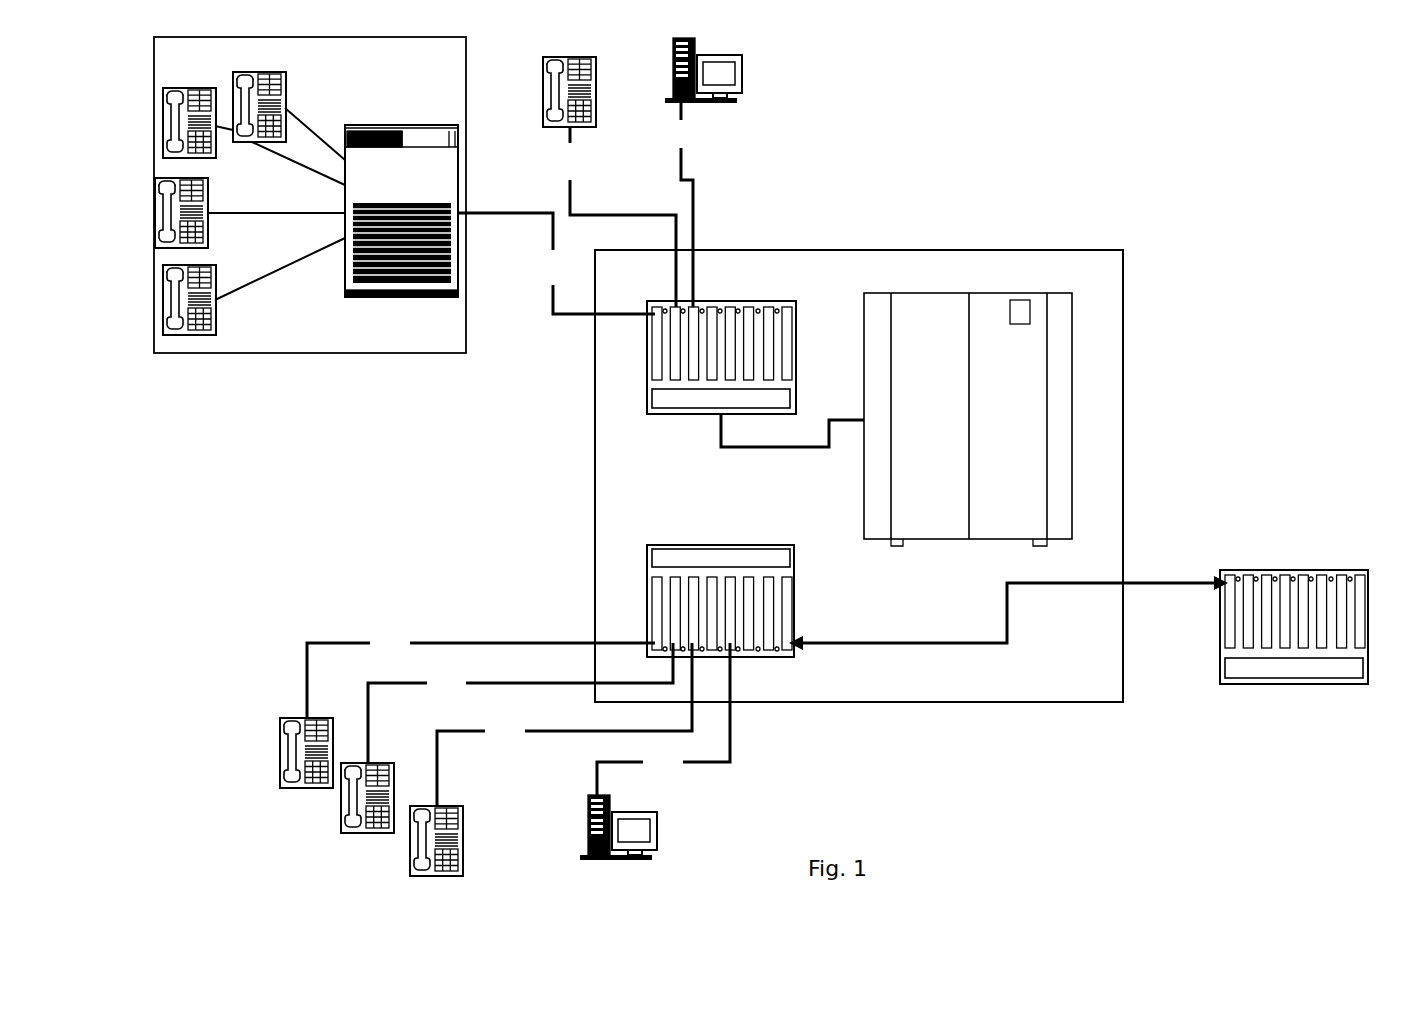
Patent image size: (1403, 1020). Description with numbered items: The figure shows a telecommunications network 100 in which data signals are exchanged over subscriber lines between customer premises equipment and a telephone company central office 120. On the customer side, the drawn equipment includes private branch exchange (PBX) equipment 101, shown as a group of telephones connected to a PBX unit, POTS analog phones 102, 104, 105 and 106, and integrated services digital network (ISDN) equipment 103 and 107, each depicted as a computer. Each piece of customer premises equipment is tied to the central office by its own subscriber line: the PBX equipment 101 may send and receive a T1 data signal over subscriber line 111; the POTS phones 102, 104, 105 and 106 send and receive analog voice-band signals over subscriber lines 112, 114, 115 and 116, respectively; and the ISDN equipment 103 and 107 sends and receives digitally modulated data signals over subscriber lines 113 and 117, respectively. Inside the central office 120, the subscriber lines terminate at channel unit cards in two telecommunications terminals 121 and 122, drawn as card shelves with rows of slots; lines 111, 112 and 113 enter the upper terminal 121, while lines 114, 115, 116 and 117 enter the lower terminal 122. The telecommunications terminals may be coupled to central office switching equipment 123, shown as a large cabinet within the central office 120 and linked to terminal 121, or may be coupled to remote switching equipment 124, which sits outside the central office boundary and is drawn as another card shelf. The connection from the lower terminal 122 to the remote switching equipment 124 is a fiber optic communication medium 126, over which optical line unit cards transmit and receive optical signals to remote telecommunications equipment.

The telecommunications network 100 is at (1110, 78).
The private branch exchange (PBX) equipment 101 is at (307, 353).
The POTS analog phone 102 is at (572, 55).
The integrated services digital network (ISDN) equipment 103 is at (690, 38).
The POTS analog phone 104 is at (302, 792).
The POTS analog phone 105 is at (368, 835).
The POTS analog phone 106 is at (436, 880).
The integrated services digital network (ISDN) equipment 107 is at (598, 860).
The subscriber line 111 is at (556, 263).
The subscriber line 112 is at (614, 217).
The subscriber line 113 is at (683, 205).
The subscriber line 114 is at (481, 674).
The subscriber line 115 is at (520, 703).
The subscriber line 116 is at (564, 724).
The subscriber line 117 is at (663, 719).
The telephone company central office 120 is at (1003, 250).
The telecommunications terminal 121 is at (758, 300).
The telecommunications terminal 122 is at (722, 543).
The central office switching equipment 123 is at (975, 293).
The remote switching equipment 124 is at (1298, 568).
The fiber optic communication medium 126 is at (1008, 613).